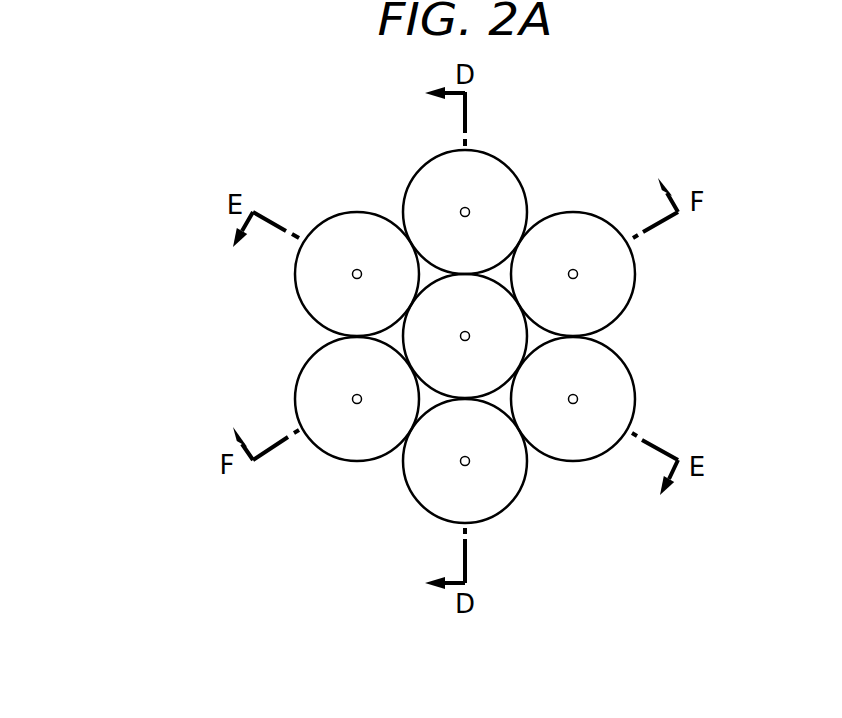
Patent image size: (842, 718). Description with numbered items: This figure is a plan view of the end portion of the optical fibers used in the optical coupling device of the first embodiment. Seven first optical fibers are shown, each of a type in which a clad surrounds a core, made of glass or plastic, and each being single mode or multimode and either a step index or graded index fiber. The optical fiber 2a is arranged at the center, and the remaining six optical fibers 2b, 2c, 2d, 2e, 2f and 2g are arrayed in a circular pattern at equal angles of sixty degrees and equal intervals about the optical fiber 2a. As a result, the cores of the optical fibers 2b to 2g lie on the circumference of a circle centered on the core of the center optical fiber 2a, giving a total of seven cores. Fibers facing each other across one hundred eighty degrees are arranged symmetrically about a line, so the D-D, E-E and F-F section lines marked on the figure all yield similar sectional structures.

The optical fiber 2a is at (482, 303).
The optical fiber 2b is at (439, 183).
The optical fiber 2c is at (440, 488).
The optical fiber 2d is at (357, 238).
The optical fiber 2e is at (589, 437).
The optical fiber 2f is at (357, 433).
The optical fiber 2g is at (599, 296).